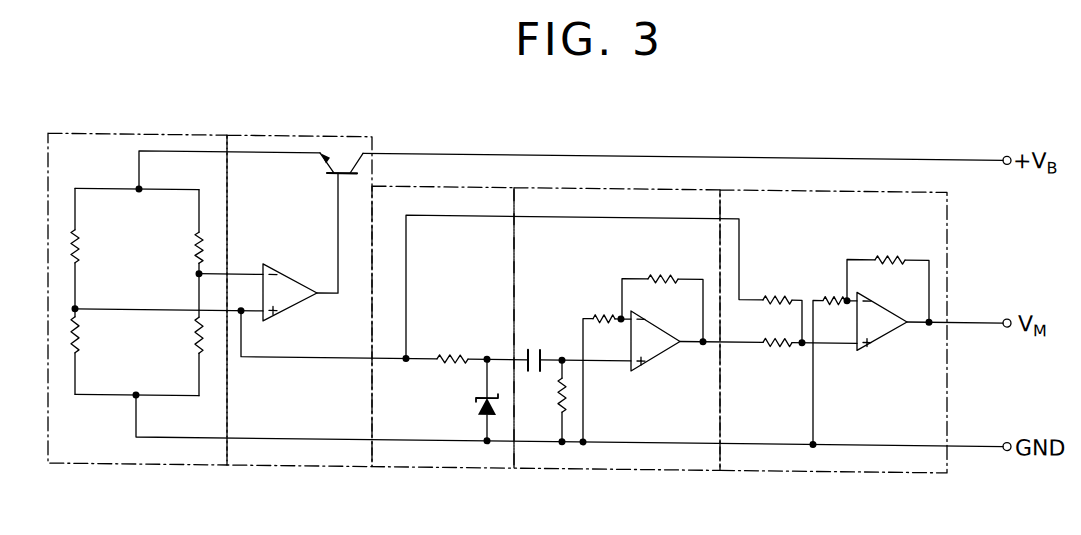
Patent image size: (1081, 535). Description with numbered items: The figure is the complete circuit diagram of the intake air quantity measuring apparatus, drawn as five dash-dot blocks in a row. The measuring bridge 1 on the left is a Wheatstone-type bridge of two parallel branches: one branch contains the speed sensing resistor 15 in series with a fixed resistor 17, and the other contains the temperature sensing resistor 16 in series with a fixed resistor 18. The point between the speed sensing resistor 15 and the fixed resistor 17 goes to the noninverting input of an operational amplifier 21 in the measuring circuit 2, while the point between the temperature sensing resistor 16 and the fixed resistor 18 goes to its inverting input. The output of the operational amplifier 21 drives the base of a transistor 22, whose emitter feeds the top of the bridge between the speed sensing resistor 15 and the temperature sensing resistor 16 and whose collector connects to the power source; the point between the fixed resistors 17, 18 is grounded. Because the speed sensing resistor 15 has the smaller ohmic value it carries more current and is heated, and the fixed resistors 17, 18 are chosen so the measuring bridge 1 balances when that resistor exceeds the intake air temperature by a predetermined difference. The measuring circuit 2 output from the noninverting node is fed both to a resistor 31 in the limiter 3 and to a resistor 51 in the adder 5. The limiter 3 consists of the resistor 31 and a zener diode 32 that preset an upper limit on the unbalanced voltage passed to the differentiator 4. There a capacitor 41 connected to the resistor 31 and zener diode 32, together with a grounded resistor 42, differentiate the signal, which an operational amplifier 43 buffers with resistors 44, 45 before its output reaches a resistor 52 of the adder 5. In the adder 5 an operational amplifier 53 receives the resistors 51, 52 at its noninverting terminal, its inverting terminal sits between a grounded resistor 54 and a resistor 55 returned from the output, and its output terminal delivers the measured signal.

The measuring bridge 1 is at (160, 464).
The measuring circuit 2 is at (312, 464).
The limiter 3 is at (448, 464).
The differentiator 4 is at (620, 464).
The adder 5 is at (835, 464).
The speed sensing resistor 15 is at (80, 244).
The temperature sensing resistor 16 is at (196, 241).
The fixed resistor 17 is at (80, 332).
The fixed resistor 18 is at (196, 343).
The operational amplifier 21 is at (300, 299).
The transistor 22 is at (329, 168).
The resistor 31 is at (453, 350).
The zener diode 32 is at (479, 391).
The capacitor 41 is at (533, 336).
The resistor 42 is at (560, 388).
The operational amplifier 43 is at (658, 348).
The resistor 44 is at (600, 309).
The resistor 45 is at (664, 268).
The resistor 51 is at (775, 288).
The resistor 52 is at (772, 338).
The operational amplifier 53 is at (892, 323).
The resistor 54 is at (830, 287).
The resistor 55 is at (890, 246).